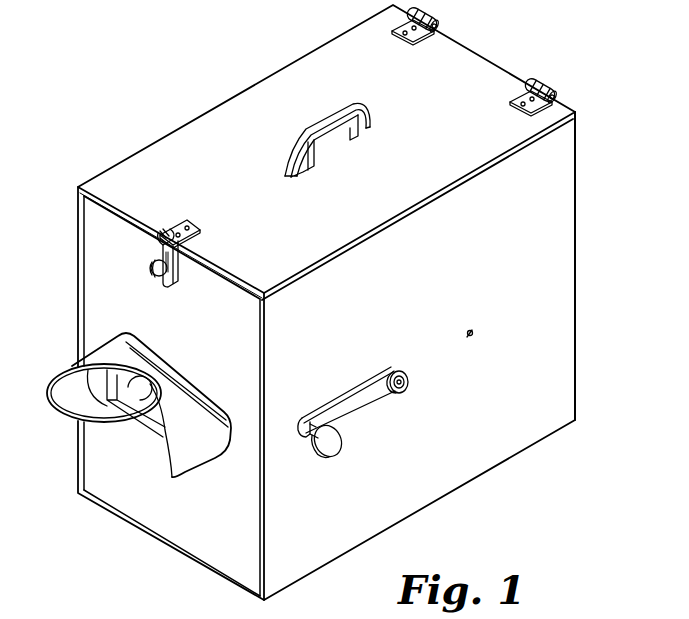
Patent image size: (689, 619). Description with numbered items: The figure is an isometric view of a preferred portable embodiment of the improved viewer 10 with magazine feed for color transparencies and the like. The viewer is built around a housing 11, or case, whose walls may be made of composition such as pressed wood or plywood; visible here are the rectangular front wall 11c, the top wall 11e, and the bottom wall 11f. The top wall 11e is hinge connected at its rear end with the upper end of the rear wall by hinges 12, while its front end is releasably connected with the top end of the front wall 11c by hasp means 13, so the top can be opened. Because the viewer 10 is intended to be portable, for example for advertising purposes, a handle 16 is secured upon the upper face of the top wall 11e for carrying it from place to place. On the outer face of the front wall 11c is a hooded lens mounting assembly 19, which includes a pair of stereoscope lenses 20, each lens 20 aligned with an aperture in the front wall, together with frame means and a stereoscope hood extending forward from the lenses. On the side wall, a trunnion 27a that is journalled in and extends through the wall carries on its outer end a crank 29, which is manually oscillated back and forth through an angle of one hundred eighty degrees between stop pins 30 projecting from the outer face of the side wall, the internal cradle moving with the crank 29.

The improved viewer 10 is at (512, 465).
The housing 11 is at (578, 283).
The front wall 11c is at (172, 396).
The top wall 11e is at (243, 225).
The bottom wall 11f is at (205, 568).
The hinges 12 is at (437, 16).
The hasp means 13 is at (177, 222).
The handle 16 is at (366, 107).
The hooded lens mounting assembly 19 is at (62, 364).
The stereoscope lens 20 is at (141, 402).
The trunnion 27a is at (408, 389).
The crank 29 is at (361, 409).
The stop pins 30 is at (474, 331).